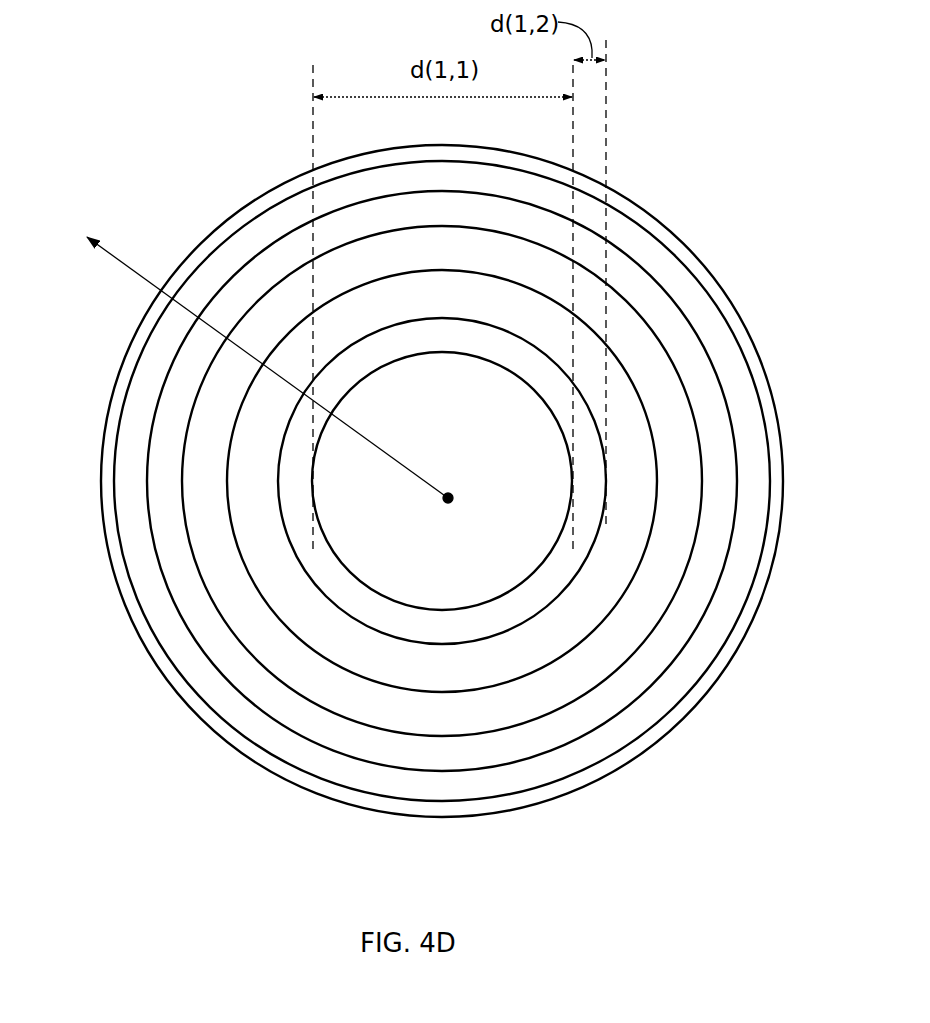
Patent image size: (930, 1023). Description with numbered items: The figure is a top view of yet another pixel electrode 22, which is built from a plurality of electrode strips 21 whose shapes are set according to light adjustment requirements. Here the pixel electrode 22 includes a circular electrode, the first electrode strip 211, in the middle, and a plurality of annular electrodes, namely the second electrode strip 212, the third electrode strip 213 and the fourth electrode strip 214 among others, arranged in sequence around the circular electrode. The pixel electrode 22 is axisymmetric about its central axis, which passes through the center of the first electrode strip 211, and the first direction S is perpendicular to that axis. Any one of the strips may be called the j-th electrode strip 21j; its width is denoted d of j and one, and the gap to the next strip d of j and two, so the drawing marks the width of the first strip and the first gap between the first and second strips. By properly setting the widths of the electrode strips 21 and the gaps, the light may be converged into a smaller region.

The electrode strips 21 is at (442, 499).
The j-th electrode strip 21j is at (672, 350).
The first electrode strip 211 is at (462, 567).
The second electrode strip 212 is at (397, 670).
The third electrode strip 213 is at (303, 713).
The fourth electrode strip 214 is at (180, 683).
The pixel electrode 22 is at (126, 175).